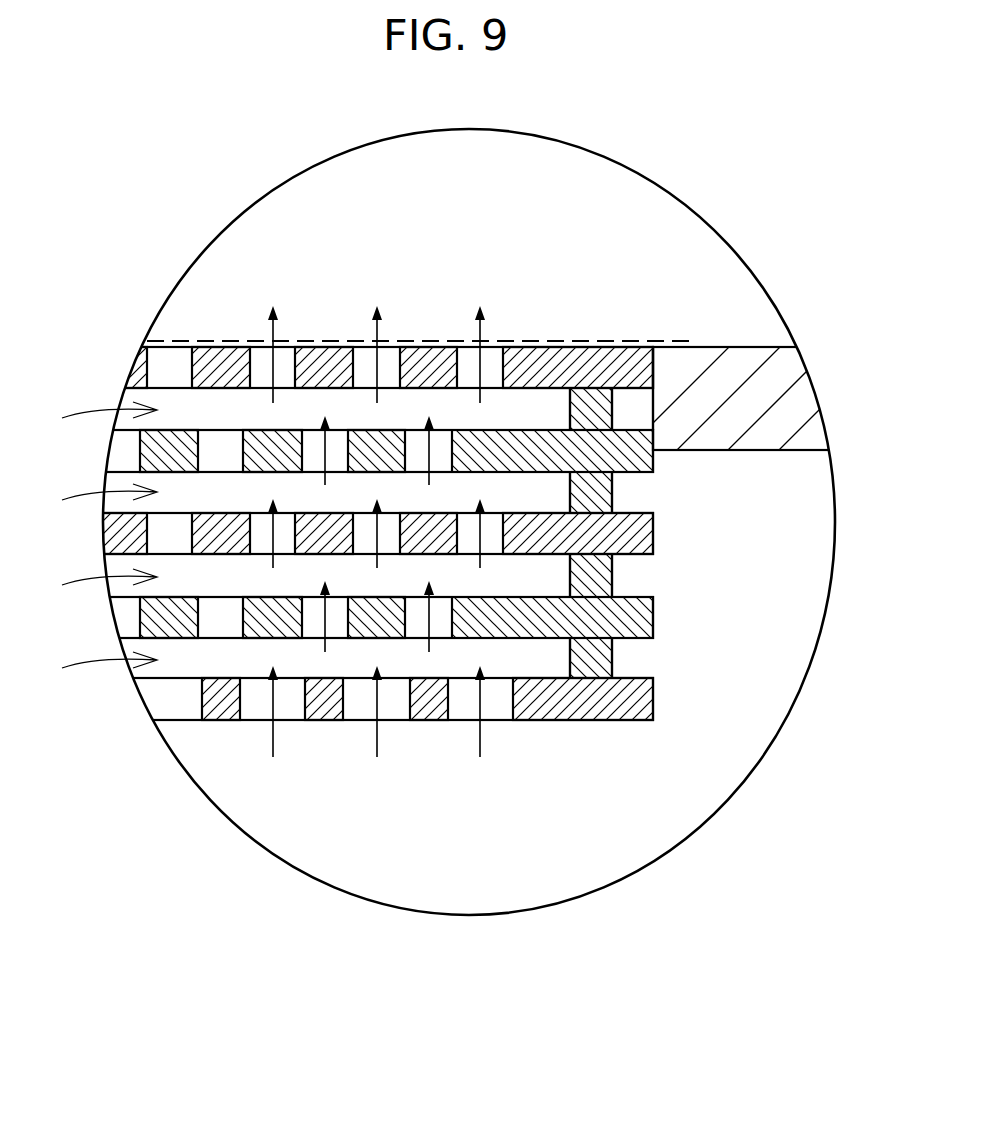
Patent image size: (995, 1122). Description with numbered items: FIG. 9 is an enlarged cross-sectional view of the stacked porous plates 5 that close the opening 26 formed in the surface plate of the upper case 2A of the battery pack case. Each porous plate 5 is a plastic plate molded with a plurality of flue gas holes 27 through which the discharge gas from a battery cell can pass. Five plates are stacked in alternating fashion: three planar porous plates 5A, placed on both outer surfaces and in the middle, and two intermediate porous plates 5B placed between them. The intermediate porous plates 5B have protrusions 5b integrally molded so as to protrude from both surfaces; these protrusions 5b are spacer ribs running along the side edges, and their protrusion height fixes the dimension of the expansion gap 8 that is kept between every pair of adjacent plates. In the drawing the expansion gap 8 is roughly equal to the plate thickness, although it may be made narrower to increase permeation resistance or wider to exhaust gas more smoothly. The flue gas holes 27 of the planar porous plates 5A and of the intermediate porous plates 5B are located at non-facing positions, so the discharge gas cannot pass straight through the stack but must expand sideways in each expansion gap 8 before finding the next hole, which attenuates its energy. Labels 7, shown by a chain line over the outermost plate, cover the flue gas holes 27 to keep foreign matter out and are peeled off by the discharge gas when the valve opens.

The upper case 2A is at (745, 402).
The porous plate 5 is at (442, 551).
The planar porous plate 5A is at (577, 385).
The intermediate porous plate 5B is at (437, 472).
The protrusion 5b is at (593, 408).
The label 7 is at (324, 341).
The expansion gap 8 is at (97, 550).
The opening 26 is at (653, 372).
The flue gas hole 27 is at (222, 437).